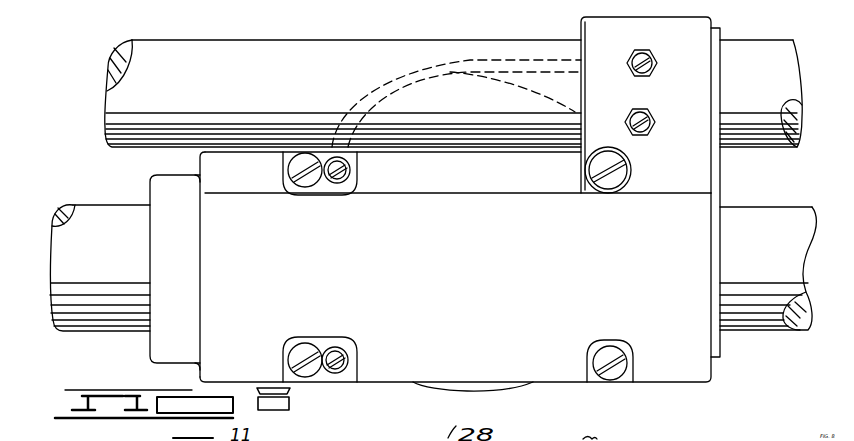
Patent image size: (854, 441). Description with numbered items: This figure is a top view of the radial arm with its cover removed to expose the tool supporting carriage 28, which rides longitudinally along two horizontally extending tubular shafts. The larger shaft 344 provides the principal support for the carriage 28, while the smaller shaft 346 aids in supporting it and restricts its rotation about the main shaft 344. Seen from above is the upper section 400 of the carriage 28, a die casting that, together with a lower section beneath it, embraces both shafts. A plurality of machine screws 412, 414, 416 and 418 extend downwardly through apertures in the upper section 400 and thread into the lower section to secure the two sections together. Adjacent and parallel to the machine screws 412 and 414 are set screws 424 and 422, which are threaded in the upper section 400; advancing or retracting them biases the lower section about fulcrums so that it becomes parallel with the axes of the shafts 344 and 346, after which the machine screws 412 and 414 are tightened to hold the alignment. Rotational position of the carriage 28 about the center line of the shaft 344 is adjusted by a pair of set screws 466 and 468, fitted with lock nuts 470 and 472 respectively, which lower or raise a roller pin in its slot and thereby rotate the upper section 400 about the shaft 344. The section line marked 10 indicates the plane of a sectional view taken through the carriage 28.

The section line 10- 10 is at (134, 98).
The carriage 28 is at (713, 384).
The tubular shaft 344 is at (123, 333).
The tubular shaft 346 is at (137, 148).
The upper section 400 is at (681, 213).
The machine screw 412 is at (316, 189).
The machine screw 414 is at (318, 342).
The machine screw 416 is at (618, 343).
The machine screw 418 is at (634, 171).
The set screw 422 is at (353, 353).
The set screw 424 is at (354, 168).
The set screw 466 is at (652, 53).
The set screw 468 is at (651, 115).
The lock nut 470 is at (627, 79).
The lock nut 472 is at (646, 99).